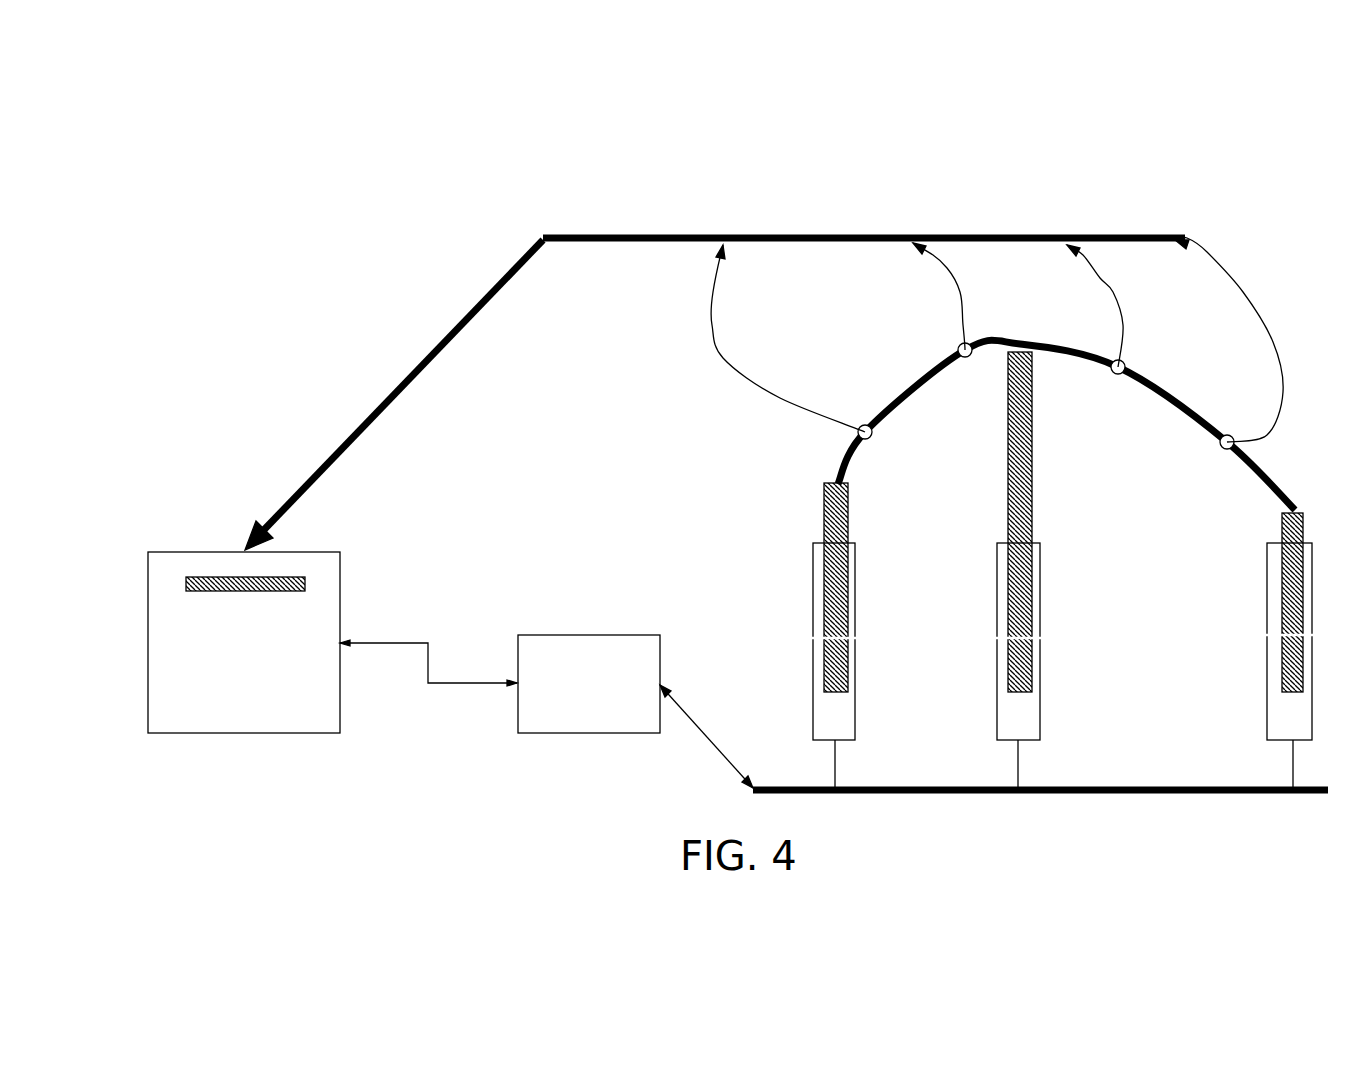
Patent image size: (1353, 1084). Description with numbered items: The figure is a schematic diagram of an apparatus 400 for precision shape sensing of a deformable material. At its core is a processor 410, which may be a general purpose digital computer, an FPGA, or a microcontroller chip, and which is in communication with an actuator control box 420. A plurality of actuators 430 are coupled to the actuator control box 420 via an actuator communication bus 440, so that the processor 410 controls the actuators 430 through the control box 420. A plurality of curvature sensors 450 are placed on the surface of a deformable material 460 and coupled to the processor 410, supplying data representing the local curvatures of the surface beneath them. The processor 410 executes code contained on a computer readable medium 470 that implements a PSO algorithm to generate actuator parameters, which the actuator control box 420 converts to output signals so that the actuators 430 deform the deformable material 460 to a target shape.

The apparatus 400 is at (350, 357).
The processor 410 is at (217, 553).
The actuator control box 420 is at (582, 638).
The actuators 430 is at (997, 613).
The actuator communication bus 440 is at (685, 710).
The curvature sensors 450 is at (957, 348).
The deformable material 460 is at (845, 465).
The computer readable medium 470 is at (305, 580).